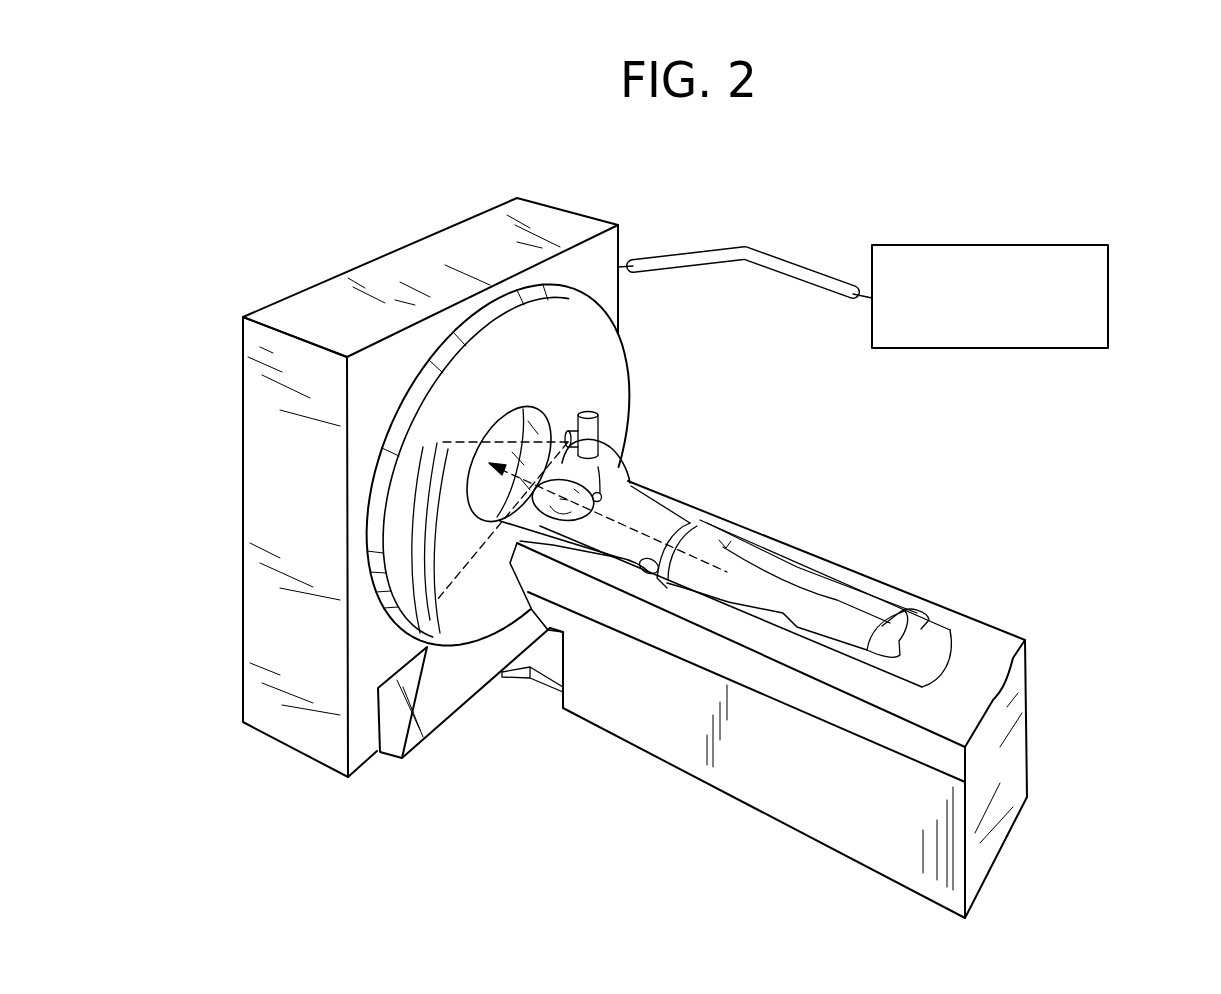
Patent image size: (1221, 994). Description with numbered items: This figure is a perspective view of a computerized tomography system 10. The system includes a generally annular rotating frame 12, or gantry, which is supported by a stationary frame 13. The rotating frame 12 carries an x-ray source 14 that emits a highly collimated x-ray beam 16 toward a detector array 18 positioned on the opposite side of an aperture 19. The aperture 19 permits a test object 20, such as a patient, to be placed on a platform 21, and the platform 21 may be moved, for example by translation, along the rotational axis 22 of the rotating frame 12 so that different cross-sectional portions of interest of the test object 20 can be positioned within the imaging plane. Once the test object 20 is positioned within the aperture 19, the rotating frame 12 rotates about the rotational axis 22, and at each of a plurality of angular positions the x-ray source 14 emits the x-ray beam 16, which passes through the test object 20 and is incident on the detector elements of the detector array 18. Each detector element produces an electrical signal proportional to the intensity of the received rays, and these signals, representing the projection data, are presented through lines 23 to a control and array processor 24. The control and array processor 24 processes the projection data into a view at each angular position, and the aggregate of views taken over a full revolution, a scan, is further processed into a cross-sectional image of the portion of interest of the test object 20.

The computerized tomography (CT) system 10 is at (1000, 502).
The rotating frame 12 is at (413, 623).
The stationary frame 13 is at (257, 447).
The x-ray source 14 is at (603, 423).
The x-ray beam 16 is at (448, 600).
The detector array 18 is at (420, 523).
The aperture 19 is at (503, 433).
The test object 20 is at (647, 508).
The platform 21 is at (620, 718).
The rotational axis 22 is at (690, 503).
The lines 23 is at (748, 245).
The control and array processor 24 is at (1108, 297).